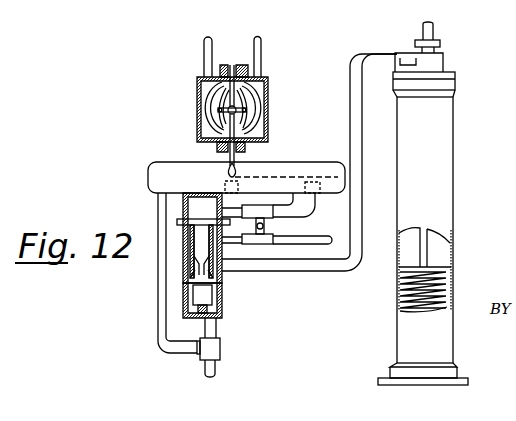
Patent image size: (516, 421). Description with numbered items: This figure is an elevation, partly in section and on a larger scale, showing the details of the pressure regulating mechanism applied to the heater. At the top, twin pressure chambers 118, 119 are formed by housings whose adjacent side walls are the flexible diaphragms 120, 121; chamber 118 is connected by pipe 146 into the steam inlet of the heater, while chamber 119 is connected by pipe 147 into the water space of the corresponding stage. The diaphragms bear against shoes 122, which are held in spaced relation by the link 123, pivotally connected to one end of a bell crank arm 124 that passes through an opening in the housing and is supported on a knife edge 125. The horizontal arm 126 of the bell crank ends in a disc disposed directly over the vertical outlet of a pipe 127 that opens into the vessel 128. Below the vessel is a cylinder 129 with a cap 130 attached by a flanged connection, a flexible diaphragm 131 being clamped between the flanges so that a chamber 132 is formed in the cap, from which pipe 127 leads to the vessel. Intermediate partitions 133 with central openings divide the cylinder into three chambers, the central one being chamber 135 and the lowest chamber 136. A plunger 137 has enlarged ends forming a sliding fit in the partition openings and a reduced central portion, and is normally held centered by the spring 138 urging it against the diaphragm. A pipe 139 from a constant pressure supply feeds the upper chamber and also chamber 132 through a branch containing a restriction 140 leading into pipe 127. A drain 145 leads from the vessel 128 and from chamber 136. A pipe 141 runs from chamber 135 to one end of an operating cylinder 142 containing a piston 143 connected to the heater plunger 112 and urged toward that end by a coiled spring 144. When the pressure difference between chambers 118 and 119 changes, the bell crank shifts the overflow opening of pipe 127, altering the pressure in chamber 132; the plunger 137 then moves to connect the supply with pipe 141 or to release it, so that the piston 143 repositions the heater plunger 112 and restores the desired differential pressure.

The heater plunger 112 is at (434, 30).
The pressure chamber 118 is at (257, 95).
The pressure chamber 119 is at (203, 133).
The flexible diaphragm 120 is at (250, 127).
The flexible diaphragm 121 is at (214, 91).
The shoes 122 is at (232, 62).
The link 123 is at (237, 116).
The bell crank arm 124 is at (247, 160).
The knife edge 125 is at (225, 183).
The horizontal arm 126 is at (290, 173).
The pipe 127 is at (312, 213).
The vessel 128 is at (148, 170).
The cylinder 129 is at (221, 300).
The cap 130 is at (192, 208).
The flexible diaphragm 131 is at (195, 226).
The chamber 132 is at (186, 203).
The intermediate partitions 133 is at (190, 266).
The chamber 135 is at (220, 274).
The chamber 136 is at (208, 308).
The plunger 137 is at (200, 293).
The spring 138 is at (193, 317).
The pipe 139 is at (290, 244).
The restriction 140 is at (267, 228).
The pipe 141 is at (313, 272).
The operating cylinder 142 is at (455, 143).
The piston 143 is at (437, 272).
The coiled spring 144 is at (450, 290).
The drain 145 is at (217, 367).
The pipe 146 is at (262, 52).
The pipe 147 is at (204, 50).